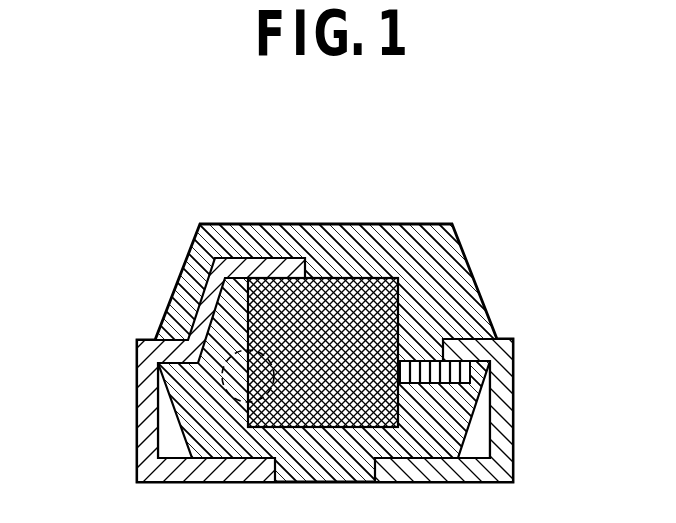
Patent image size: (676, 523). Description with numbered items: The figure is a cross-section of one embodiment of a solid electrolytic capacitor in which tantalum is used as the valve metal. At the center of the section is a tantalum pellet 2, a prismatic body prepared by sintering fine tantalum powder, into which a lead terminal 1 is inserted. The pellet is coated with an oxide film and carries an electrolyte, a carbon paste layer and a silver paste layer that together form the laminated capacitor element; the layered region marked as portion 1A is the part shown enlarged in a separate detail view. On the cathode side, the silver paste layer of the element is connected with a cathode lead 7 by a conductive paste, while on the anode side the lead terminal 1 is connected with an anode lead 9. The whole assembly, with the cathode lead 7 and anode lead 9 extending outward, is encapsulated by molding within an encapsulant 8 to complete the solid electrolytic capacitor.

The lead terminal 1 is at (421, 358).
The portion indicated by reference numeral 1A is at (231, 389).
The tantalum pellet 2 is at (357, 305).
The cathode lead 7 is at (153, 357).
The encapsulant 8 is at (335, 250).
The anode lead 9 is at (500, 402).